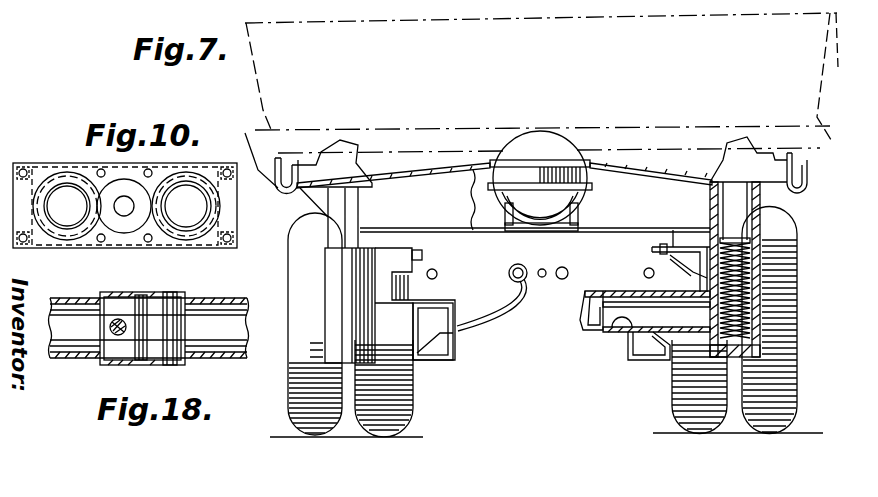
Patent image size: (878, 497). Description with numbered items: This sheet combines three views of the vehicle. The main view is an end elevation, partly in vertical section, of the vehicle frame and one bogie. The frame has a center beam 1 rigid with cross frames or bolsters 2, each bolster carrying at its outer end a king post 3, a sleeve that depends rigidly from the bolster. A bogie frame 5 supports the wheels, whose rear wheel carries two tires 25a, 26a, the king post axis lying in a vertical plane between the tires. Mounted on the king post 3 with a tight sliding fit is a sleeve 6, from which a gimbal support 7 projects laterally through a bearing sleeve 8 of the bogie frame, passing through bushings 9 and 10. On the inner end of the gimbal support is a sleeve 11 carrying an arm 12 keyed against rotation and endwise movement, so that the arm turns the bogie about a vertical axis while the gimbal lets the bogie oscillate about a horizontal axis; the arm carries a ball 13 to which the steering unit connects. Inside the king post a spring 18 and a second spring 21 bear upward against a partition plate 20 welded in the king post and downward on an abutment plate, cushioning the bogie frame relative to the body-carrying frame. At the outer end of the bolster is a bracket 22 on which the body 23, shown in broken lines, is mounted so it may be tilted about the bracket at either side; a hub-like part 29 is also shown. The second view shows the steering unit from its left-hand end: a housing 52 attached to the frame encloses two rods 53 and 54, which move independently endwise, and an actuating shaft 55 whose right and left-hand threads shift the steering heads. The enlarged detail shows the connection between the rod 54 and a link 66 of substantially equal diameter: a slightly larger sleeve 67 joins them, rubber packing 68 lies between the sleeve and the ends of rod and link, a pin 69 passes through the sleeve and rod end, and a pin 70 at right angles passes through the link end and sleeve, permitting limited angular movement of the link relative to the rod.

In FIG. 7, the center beam 1 is at (578, 220).
In FIG. 7, the cross frame or bolster 2 is at (613, 231).
In FIG. 7, the king post 3 is at (347, 217).
In FIG. 7, the bogie frame 5 is at (453, 352).
In FIG. 7, the sleeve 6 is at (803, 289).
In FIG. 7, the gimbal support 7 is at (597, 331).
In FIG. 7, the bearing sleeve 8 is at (430, 300).
In FIG. 7, the bushing 9 is at (688, 317).
In FIG. 7, the bushing 10 is at (656, 320).
In FIG. 7, the sleeve 11 is at (613, 292).
In FIG. 7, the arm 12 is at (500, 318).
In FIG. 7, the ball 13 is at (516, 263).
In FIG. 7, the spring 18 is at (755, 343).
In FIG. 7, the partition plate 20 is at (740, 238).
In FIG. 7, the second spring 21 is at (747, 277).
In FIG. 7, the bracket 22 is at (800, 180).
In FIG. 7, the body 23 is at (836, 78).
In FIG. 7, the tire 25a is at (298, 363).
In FIG. 7, the tire 26a is at (413, 393).
In FIG. 7, the hub 29 is at (547, 133).
In FIG. 10, the housing 52 is at (120, 178).
In FIG. 10, the rod 53 is at (190, 195).
In FIG. 10, the rod 54 is at (67, 206).
In FIG. 18, the rod 54 is at (232, 300).
In FIG. 7, the actuating shaft 55 is at (553, 245).
In FIG. 10, the actuating shaft 55 is at (127, 208).
In FIG. 18, the link 66 is at (57, 298).
In FIG. 18, the sleeve 67 is at (108, 293).
In FIG. 18, the rubber packing 68 is at (188, 295).
In FIG. 18, the pin 69 is at (182, 342).
In FIG. 18, the pin 70 is at (114, 332).